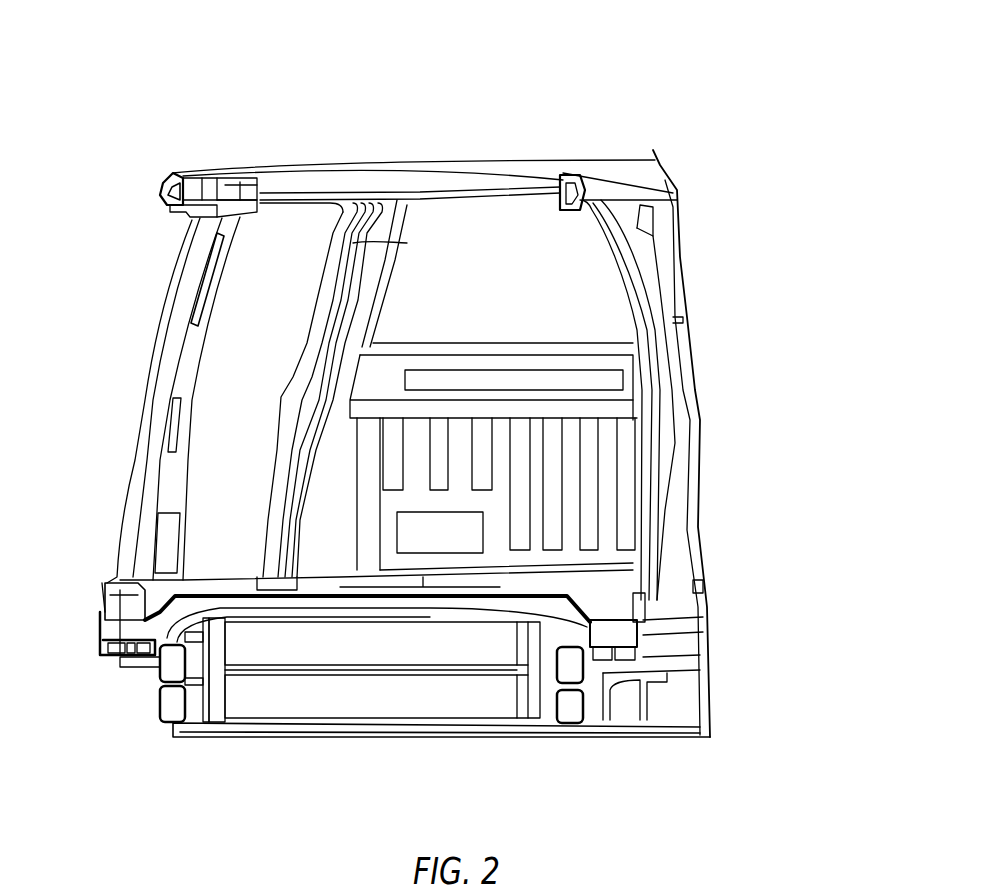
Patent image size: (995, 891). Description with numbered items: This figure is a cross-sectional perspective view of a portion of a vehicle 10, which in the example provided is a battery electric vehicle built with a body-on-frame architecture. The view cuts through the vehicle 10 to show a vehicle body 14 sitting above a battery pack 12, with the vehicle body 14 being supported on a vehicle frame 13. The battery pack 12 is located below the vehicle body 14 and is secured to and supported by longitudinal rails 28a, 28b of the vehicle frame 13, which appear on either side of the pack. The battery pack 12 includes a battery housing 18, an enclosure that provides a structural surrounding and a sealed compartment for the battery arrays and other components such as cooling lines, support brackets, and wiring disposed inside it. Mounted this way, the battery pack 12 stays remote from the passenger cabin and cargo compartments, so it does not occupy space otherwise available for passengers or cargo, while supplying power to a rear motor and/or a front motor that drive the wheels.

The vehicle 10 is at (409, 418).
The battery pack 12 is at (527, 698).
The vehicle frame 13 is at (141, 685).
The vehicle body 14 is at (408, 443).
The battery housing 18 is at (492, 615).
The longitudinal rail 28a is at (173, 692).
The longitudinal rail 28b is at (593, 693).